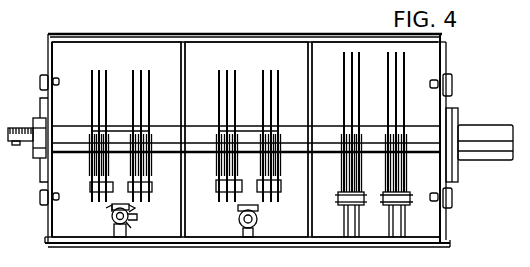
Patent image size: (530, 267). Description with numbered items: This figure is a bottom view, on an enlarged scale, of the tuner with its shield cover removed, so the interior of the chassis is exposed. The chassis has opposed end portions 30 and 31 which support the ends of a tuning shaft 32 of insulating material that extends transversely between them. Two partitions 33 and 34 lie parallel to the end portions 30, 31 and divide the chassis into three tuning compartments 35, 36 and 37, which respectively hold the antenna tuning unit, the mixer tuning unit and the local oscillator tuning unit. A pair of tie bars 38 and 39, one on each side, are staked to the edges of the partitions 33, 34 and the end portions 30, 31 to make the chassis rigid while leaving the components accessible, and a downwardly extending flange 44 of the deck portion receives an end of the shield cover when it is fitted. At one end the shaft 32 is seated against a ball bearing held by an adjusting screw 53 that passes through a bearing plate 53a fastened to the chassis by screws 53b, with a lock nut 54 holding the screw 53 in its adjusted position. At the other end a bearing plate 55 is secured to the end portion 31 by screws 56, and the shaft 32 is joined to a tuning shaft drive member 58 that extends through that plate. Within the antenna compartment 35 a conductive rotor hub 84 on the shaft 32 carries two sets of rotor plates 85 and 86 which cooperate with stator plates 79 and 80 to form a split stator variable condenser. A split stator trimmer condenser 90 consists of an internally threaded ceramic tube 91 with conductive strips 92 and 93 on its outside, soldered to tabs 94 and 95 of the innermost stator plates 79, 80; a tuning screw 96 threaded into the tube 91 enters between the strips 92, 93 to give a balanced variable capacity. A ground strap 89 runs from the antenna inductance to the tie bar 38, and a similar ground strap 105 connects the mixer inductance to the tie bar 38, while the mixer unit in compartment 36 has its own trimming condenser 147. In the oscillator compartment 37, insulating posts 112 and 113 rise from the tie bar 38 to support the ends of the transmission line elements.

The end portion 30 is at (50, 55).
The end portion 31 is at (445, 60).
The tuning shaft 32 is at (203, 128).
The partition 33 is at (184, 92).
The partition 34 is at (313, 100).
The tuning compartment 35 is at (124, 63).
The tuning compartment 36 is at (259, 63).
The tuning compartment 37 is at (384, 63).
The tie bar 38 is at (274, 44).
The tie bar 39 is at (275, 236).
The flange 44 is at (286, 37).
The adjusting screw 53 is at (16, 146).
The bearing plate 53a is at (44, 170).
The screw 53b is at (44, 78).
The lock nut 54 is at (38, 118).
The bearing plate 55 is at (451, 110).
The screw 56 is at (453, 80).
The tuning shaft drive member 58 is at (484, 146).
The stator plate 79 is at (91, 185).
The stator plate 80 is at (151, 186).
The rotor hub 84 is at (117, 130).
The rotor plate 85 is at (91, 80).
The rotor plate 86 is at (151, 97).
The ground strap 89 is at (122, 228).
The split stator trimmer condenser 90 is at (123, 197).
The ceramic tube 91 is at (115, 224).
The conductive strip 92 is at (113, 222).
The conductive strip 93 is at (138, 218).
The tab 94 is at (108, 208).
The tab 95 is at (135, 207).
The tuning screw 96 is at (130, 222).
The ground strap 105 is at (246, 231).
The insulating post 112 is at (350, 230).
The insulating post 113 is at (402, 230).
The trimming condenser 147 is at (247, 202).